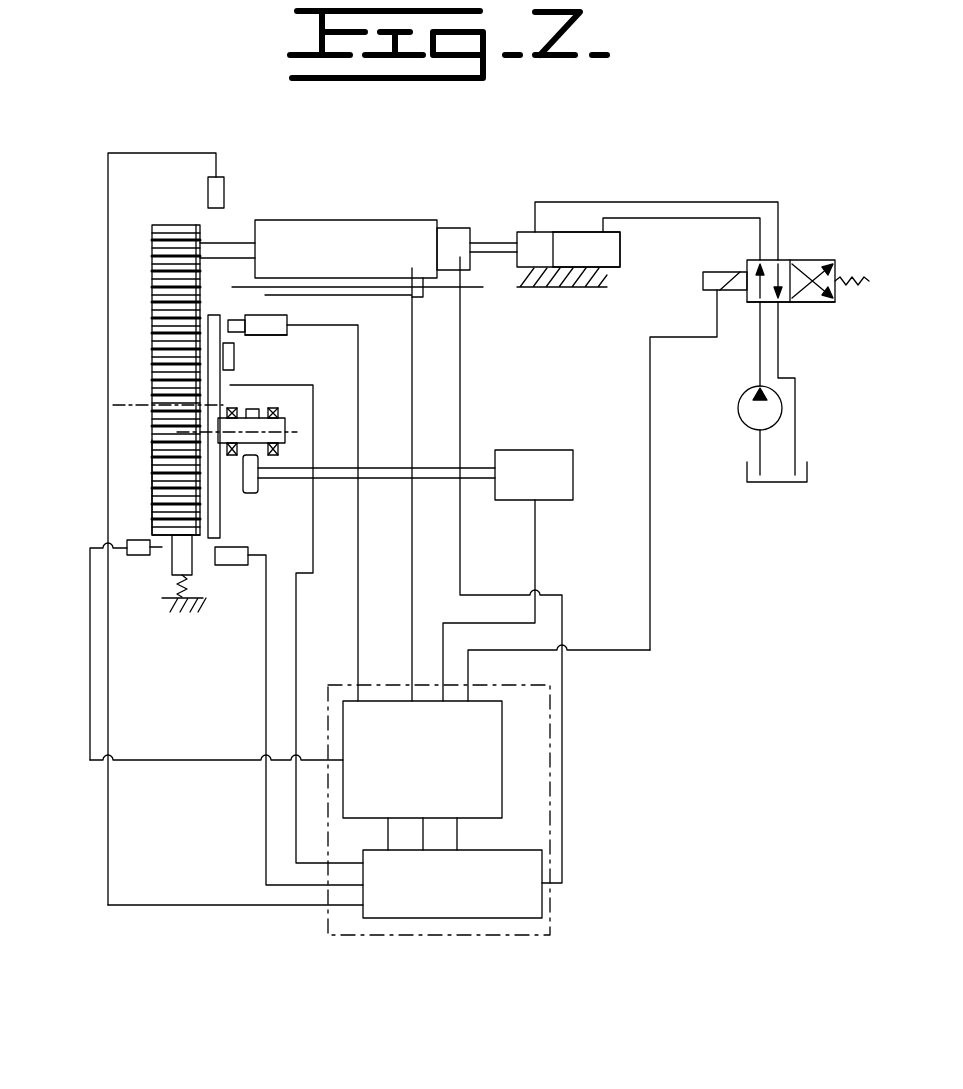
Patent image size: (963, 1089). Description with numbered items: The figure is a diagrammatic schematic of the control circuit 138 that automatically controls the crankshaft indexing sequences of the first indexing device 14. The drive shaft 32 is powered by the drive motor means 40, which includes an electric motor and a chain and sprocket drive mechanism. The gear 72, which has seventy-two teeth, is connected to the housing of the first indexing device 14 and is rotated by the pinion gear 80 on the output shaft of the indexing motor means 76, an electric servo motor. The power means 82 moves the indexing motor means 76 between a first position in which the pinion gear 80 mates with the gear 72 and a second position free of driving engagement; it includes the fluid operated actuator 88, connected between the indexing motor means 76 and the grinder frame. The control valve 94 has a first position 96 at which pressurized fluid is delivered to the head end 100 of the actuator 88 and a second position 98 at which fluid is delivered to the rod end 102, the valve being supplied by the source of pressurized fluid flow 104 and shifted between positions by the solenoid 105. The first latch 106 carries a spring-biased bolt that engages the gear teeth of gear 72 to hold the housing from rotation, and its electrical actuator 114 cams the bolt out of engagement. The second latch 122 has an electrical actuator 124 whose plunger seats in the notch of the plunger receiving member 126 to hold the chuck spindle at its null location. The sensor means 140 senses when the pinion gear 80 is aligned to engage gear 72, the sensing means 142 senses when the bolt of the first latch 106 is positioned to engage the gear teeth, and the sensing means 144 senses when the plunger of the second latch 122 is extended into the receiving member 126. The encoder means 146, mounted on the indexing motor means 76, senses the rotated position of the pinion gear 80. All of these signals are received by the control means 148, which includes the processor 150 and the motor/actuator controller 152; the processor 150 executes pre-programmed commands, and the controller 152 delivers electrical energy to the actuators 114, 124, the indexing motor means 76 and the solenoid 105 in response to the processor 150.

The first indexing device 14 is at (138, 132).
The pinion gear 80 is at (180, 224).
The gear 72 is at (153, 478).
The sensor means 140 is at (224, 192).
The plunger receiving member 126 is at (220, 312).
The indexing motor means 76 is at (400, 210).
The encoder means 146 is at (465, 240).
The fluid operated actuator 88 is at (587, 232).
The head end 100 is at (618, 251).
The rod end 102 is at (533, 258).
The power means 82 is at (772, 165).
The first position 96 is at (752, 259).
The second position 98 is at (815, 261).
The control valve 94 is at (841, 309).
The solenoid 105 is at (708, 285).
The source of pressurized fluid flow 104 is at (738, 414).
The drive shaft 32 is at (284, 427).
The drive motor means 40 is at (557, 448).
The electrical actuator 124 is at (277, 311).
The second latch 122 is at (318, 338).
The sensing means 144 is at (233, 362).
The electrical actuator 114 is at (128, 541).
The first latch 106 is at (146, 570).
The sensing means 142 is at (228, 566).
The control circuit 138 is at (764, 660).
The motor/actuator controller 152 is at (502, 742).
The processor 150 is at (542, 900).
The control means 148 is at (553, 922).